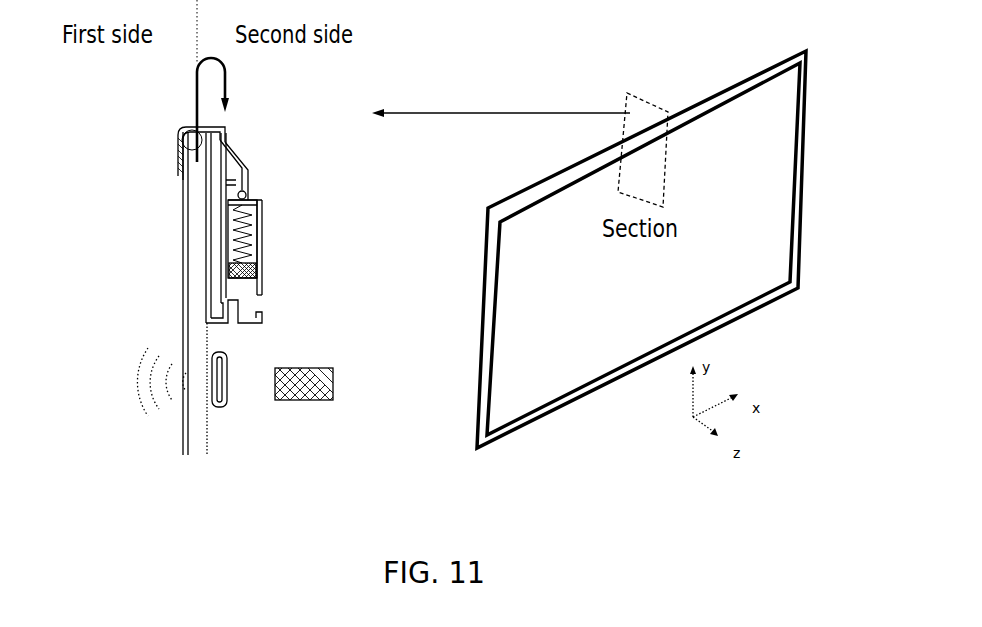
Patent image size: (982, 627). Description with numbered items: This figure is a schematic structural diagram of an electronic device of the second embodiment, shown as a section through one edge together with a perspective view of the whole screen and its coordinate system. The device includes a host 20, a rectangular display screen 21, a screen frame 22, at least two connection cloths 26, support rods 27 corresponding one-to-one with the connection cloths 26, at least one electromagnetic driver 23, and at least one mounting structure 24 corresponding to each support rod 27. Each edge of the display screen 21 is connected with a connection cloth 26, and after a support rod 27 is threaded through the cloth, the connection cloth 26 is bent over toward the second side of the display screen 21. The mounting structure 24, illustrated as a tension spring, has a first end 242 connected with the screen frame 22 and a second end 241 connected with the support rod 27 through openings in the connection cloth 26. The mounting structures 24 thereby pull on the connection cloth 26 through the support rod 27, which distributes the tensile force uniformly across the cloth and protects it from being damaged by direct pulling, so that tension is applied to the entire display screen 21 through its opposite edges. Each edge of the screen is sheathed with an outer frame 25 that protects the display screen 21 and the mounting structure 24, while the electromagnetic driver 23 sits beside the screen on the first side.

The host 20 is at (333, 393).
The display screen 21 is at (198, 255).
The screen frame 22 is at (262, 292).
The electromagnetic driver 23 is at (228, 387).
The mounting structure 24 is at (258, 227).
The second end 241 is at (262, 200).
The first end 242 is at (258, 258).
The outer frame 25 is at (200, 128).
The connection cloth 26 is at (225, 132).
The support rod 27 is at (246, 193).